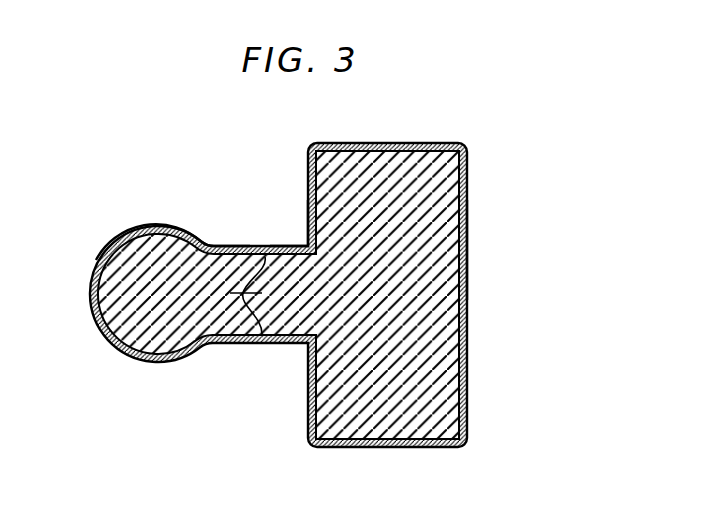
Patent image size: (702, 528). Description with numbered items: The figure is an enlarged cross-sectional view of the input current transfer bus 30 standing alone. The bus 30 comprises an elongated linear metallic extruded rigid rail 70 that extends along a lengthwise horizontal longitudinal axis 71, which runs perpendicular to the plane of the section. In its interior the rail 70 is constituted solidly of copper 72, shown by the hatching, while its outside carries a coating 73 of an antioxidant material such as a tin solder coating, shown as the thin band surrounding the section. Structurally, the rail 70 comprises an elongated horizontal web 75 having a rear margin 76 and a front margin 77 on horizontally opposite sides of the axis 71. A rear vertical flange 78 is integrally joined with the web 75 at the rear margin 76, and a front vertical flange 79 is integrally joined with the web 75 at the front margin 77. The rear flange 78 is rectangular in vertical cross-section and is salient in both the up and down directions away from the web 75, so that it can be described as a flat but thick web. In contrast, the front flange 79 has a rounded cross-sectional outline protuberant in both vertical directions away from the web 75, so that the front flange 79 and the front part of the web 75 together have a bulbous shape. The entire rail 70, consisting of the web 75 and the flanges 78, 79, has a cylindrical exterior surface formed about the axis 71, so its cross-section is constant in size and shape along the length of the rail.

The current transfer bus 30 is at (319, 110).
The rail 70 is at (534, 304).
The longitudinal axis 71 is at (262, 334).
The copper 72 is at (120, 323).
The coating 73 is at (111, 338).
The web 75 is at (262, 246).
The rear margin 76 is at (309, 247).
The front margin 77 is at (227, 246).
The rear flange 78 is at (445, 250).
The front flange 79 is at (118, 254).